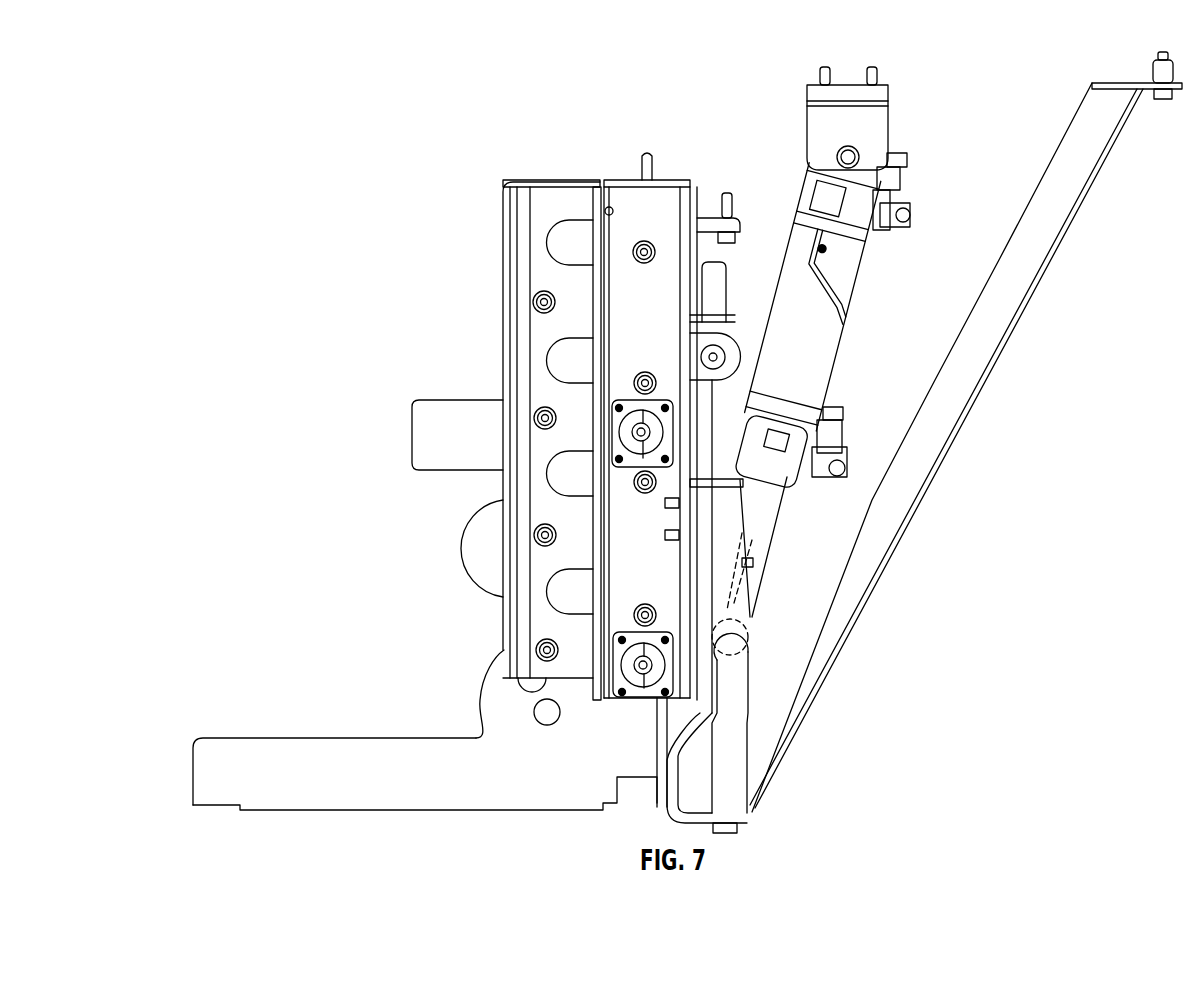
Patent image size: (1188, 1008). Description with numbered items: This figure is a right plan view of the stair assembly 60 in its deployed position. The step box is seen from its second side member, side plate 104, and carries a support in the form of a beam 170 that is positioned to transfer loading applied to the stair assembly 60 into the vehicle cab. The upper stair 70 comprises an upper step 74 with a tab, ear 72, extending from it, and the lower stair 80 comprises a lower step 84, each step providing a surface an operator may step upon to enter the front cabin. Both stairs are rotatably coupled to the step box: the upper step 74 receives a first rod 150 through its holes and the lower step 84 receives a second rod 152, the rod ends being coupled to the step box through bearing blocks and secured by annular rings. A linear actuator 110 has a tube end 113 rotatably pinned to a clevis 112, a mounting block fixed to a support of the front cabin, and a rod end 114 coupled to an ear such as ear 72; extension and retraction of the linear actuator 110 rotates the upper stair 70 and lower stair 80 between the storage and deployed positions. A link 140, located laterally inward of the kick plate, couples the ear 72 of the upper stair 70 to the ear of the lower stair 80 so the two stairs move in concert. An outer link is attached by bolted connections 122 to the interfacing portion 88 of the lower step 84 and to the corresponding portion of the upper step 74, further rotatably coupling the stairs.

The stair assembly 60 is at (255, 128).
The upper stair 70 is at (401, 434).
The ear 72 is at (732, 352).
The upper step 74 is at (470, 413).
The lower stair 80 is at (183, 775).
The lower step 84 is at (280, 750).
The interfacing portion 88 is at (505, 698).
The side plate 104 is at (664, 322).
The linear actuator 110 is at (843, 277).
The clevis 112 is at (880, 127).
The tube end 113 is at (810, 188).
The rod end 114 is at (753, 638).
The bolted connection 122 is at (487, 553).
The link 140 is at (723, 437).
The first rod 150 is at (727, 483).
The second rod 152 is at (640, 676).
The beam 170 is at (1063, 197).